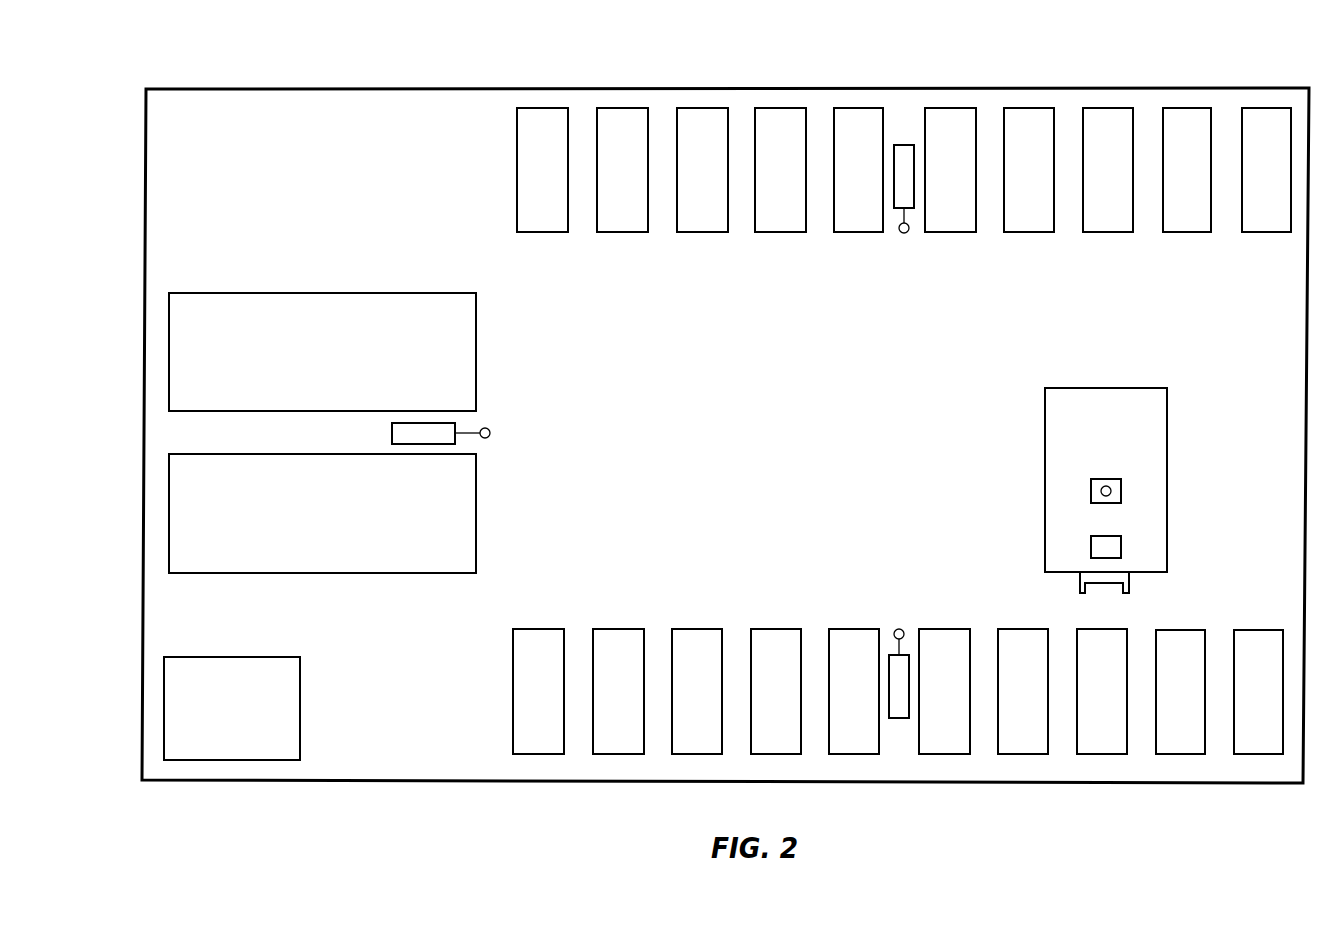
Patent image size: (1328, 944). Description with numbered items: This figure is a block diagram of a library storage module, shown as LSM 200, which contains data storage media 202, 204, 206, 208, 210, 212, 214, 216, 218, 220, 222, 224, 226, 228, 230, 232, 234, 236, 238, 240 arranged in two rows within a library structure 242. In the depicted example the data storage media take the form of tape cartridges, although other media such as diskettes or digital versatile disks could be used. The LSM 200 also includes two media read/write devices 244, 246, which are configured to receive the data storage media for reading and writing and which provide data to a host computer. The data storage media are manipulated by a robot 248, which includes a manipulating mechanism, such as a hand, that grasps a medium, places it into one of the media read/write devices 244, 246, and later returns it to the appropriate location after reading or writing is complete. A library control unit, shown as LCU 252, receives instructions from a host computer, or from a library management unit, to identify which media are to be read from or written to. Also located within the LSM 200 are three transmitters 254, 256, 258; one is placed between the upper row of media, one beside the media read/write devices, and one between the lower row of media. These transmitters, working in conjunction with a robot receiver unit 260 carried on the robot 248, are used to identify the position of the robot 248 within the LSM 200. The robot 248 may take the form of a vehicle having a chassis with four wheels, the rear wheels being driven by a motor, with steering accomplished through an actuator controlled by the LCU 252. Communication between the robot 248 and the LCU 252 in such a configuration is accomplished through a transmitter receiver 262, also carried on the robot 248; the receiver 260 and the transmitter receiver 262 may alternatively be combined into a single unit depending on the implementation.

The library storage module (LSM) 200 is at (216, 53).
The data storage media 202 is at (524, 175).
The data storage media 204 is at (604, 175).
The data storage media 206 is at (684, 175).
The data storage media 208 is at (762, 175).
The data storage media 210 is at (840, 175).
The data storage media 212 is at (932, 175).
The data storage media 214 is at (1011, 175).
The data storage media 216 is at (1090, 175).
The data storage media 218 is at (1169, 175).
The data storage media 220 is at (1248, 175).
The data storage media 222 is at (520, 697).
The data storage media 224 is at (600, 697).
The data storage media 226 is at (679, 697).
The data storage media 228 is at (758, 697).
The data storage media 230 is at (836, 697).
The data storage media 232 is at (926, 697).
The data storage media 234 is at (1005, 697).
The data storage media 236 is at (1084, 697).
The data storage media 238 is at (1163, 697).
The data storage media 240 is at (1241, 697).
The library structure 242 is at (891, 87).
The media read/write device 244 is at (303, 387).
The media read/write device 246 is at (303, 548).
The robot 248 is at (1124, 418).
The library control unit (LCU) 252 is at (250, 743).
The transmitter 254 is at (906, 233).
The transmitter 256 is at (491, 432).
The transmitter 258 is at (899, 628).
The robot receiver unit 260 is at (1121, 490).
The transmitter receiver 262 is at (1121, 548).